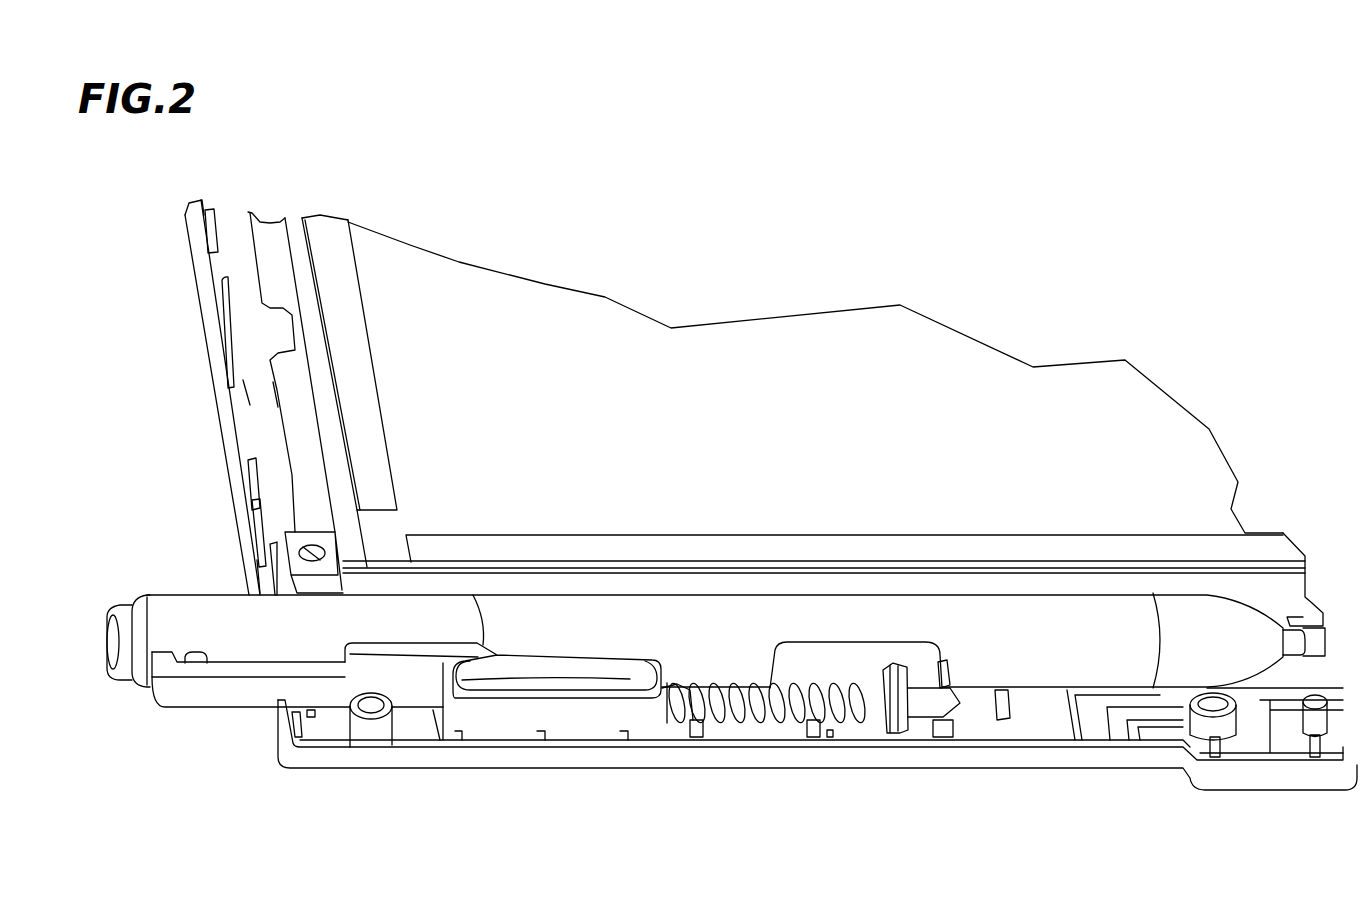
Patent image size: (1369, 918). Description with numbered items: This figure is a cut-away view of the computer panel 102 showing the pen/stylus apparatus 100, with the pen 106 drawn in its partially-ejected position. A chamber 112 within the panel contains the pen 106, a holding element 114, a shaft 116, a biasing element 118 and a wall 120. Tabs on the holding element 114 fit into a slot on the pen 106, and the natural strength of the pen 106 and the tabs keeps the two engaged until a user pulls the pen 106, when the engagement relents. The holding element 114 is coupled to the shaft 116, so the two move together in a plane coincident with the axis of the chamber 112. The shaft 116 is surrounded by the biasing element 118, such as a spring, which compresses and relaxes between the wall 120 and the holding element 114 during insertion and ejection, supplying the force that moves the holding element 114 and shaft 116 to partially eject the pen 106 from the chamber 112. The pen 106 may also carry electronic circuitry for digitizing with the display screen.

The pen/stylus apparatus 100 is at (1019, 517).
The computer panel 102 is at (1183, 330).
The pen 106 is at (128, 690).
The chamber 112 is at (1323, 590).
The holding element 114 is at (495, 714).
The shaft 116 is at (937, 737).
The biasing element 118 is at (813, 723).
The wall 120 is at (888, 727).